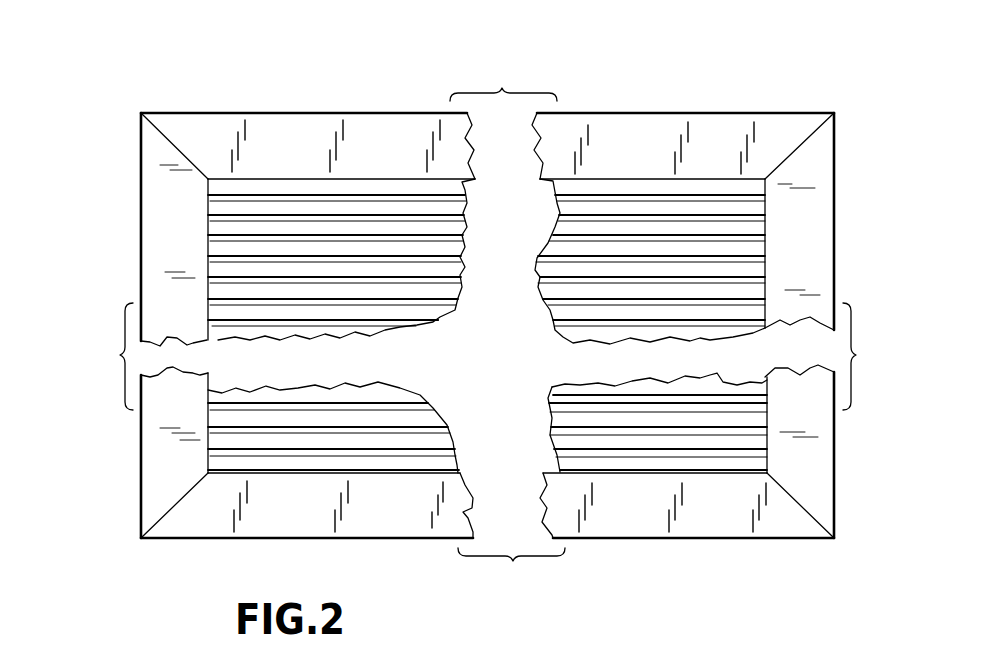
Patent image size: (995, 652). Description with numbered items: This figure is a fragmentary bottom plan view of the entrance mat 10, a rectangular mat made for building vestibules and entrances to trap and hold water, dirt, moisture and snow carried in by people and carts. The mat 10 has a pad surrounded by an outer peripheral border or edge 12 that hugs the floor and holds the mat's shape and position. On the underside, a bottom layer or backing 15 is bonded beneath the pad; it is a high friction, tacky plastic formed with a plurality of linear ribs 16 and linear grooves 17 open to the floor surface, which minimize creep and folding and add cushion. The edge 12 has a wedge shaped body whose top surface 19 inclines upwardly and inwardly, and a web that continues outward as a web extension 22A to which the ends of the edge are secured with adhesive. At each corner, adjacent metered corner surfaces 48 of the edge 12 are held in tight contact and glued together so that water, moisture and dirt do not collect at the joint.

The mat 10 is at (842, 220).
The outer peripheral border or edge 12 is at (656, 153).
The bottom layer or backing 15 is at (318, 185).
The linear ribs 16 is at (598, 185).
The linear grooves 17 is at (410, 185).
The top surface 19 is at (140, 262).
The web extension 22A is at (163, 412).
The metered corner surface 48 is at (805, 143).